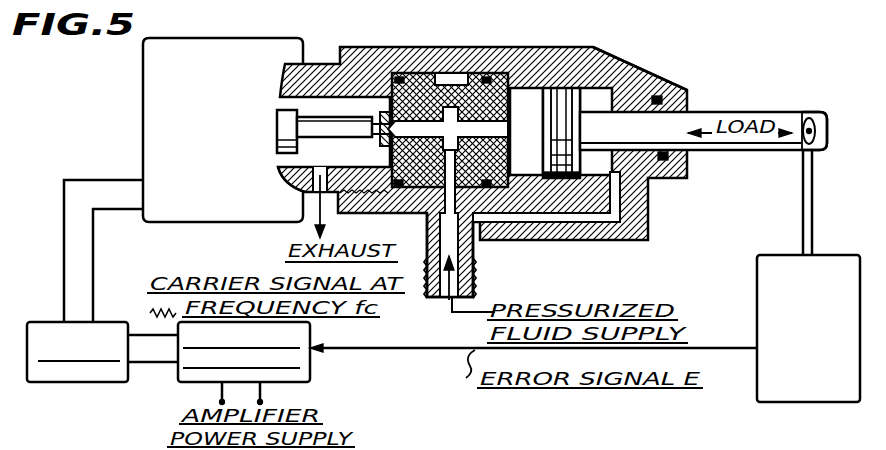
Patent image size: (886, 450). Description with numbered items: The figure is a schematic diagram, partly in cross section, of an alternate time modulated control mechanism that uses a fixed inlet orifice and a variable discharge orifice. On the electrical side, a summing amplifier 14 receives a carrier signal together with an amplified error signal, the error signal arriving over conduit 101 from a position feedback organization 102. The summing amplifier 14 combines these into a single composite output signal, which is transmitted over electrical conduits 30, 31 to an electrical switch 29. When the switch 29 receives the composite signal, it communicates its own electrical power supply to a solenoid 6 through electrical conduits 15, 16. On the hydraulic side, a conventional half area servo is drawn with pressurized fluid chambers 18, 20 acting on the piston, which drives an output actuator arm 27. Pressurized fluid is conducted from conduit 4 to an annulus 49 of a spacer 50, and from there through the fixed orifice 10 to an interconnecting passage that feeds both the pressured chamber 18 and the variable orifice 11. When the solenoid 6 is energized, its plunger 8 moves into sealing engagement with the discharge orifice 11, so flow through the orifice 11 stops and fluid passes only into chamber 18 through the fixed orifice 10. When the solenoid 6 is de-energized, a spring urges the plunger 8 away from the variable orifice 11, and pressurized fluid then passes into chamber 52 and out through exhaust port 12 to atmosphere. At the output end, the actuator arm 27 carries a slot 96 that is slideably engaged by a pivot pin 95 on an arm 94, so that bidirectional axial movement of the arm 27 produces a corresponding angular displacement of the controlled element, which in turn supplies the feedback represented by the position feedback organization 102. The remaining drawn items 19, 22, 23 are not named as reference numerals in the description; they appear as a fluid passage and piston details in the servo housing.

The conduit 4 is at (464, 256).
The solenoid 6 is at (214, 141).
The plunger 8 is at (288, 108).
The fixed orifice 10 is at (370, 204).
The variable orifice 11 is at (378, 108).
The exhaust port 12 is at (292, 182).
The summing amplifier 14 is at (310, 371).
The electrical conduit 15 is at (93, 252).
The electrical conduit 16 is at (62, 236).
The pressurized fluid chamber 18 is at (593, 97).
The fluid channel 19 is at (624, 203).
The pressurized fluid chamber 20 is at (613, 50).
The piston 22 is at (590, 180).
The piston ring 23 is at (556, 180).
The output actuator arm 27 is at (708, 110).
The electrical switch 29 is at (72, 374).
The electrical conduit 30 is at (141, 334).
The electrical conduit 31 is at (152, 366).
The annulus 49 is at (452, 80).
The spacer 50 is at (531, 100).
The chamber 52 is at (280, 155).
The arm 94 is at (812, 181).
The pivot pin 95 is at (828, 123).
The slot 96 is at (806, 118).
The conduit 101 is at (403, 350).
The position feedback organization 102 is at (812, 350).